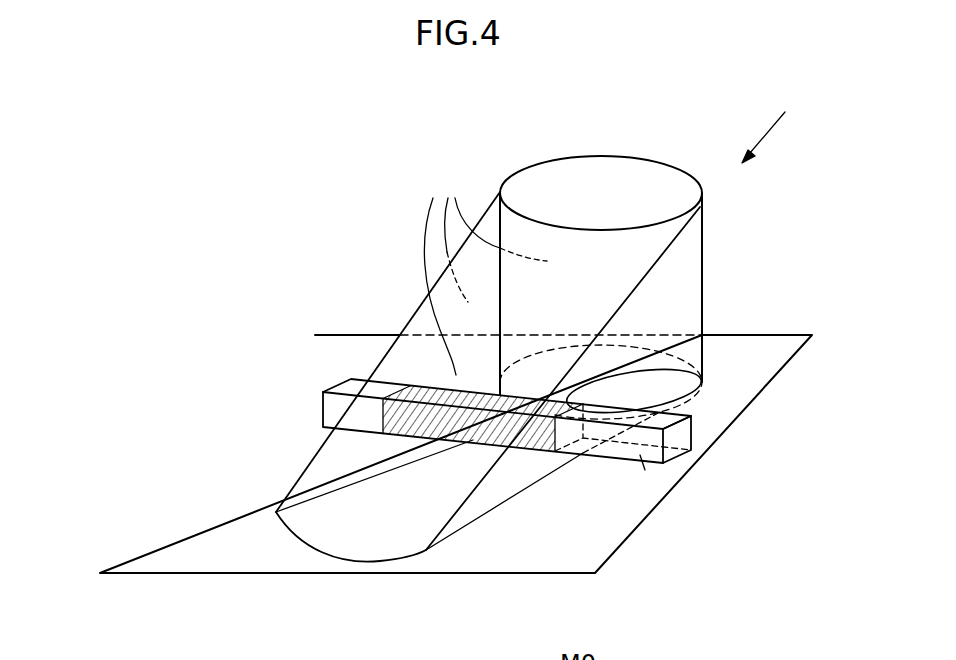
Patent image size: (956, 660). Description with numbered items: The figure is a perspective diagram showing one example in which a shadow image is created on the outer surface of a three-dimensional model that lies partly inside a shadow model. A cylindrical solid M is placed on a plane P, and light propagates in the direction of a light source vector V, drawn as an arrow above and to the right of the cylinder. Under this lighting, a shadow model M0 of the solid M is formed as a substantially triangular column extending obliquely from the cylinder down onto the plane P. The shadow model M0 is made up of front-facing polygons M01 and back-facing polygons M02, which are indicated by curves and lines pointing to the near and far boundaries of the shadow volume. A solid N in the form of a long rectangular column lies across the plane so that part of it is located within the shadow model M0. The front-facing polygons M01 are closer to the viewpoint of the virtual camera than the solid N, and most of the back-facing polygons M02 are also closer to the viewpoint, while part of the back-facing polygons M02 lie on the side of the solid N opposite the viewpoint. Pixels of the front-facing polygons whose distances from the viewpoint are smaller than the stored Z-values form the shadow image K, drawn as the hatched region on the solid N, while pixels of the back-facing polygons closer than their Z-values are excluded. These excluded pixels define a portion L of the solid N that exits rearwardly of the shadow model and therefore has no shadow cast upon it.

The cylindrical solid M is at (672, 293).
The shadow model M0 is at (405, 282).
The front-facing polygons M01 is at (508, 490).
The back-facing polygons M02 is at (484, 272).
The shadow image K is at (707, 380).
The portion of solid N L is at (363, 417).
The solid in the form of a rectangular column N is at (645, 470).
The plane P is at (540, 556).
The light source vector V is at (762, 140).